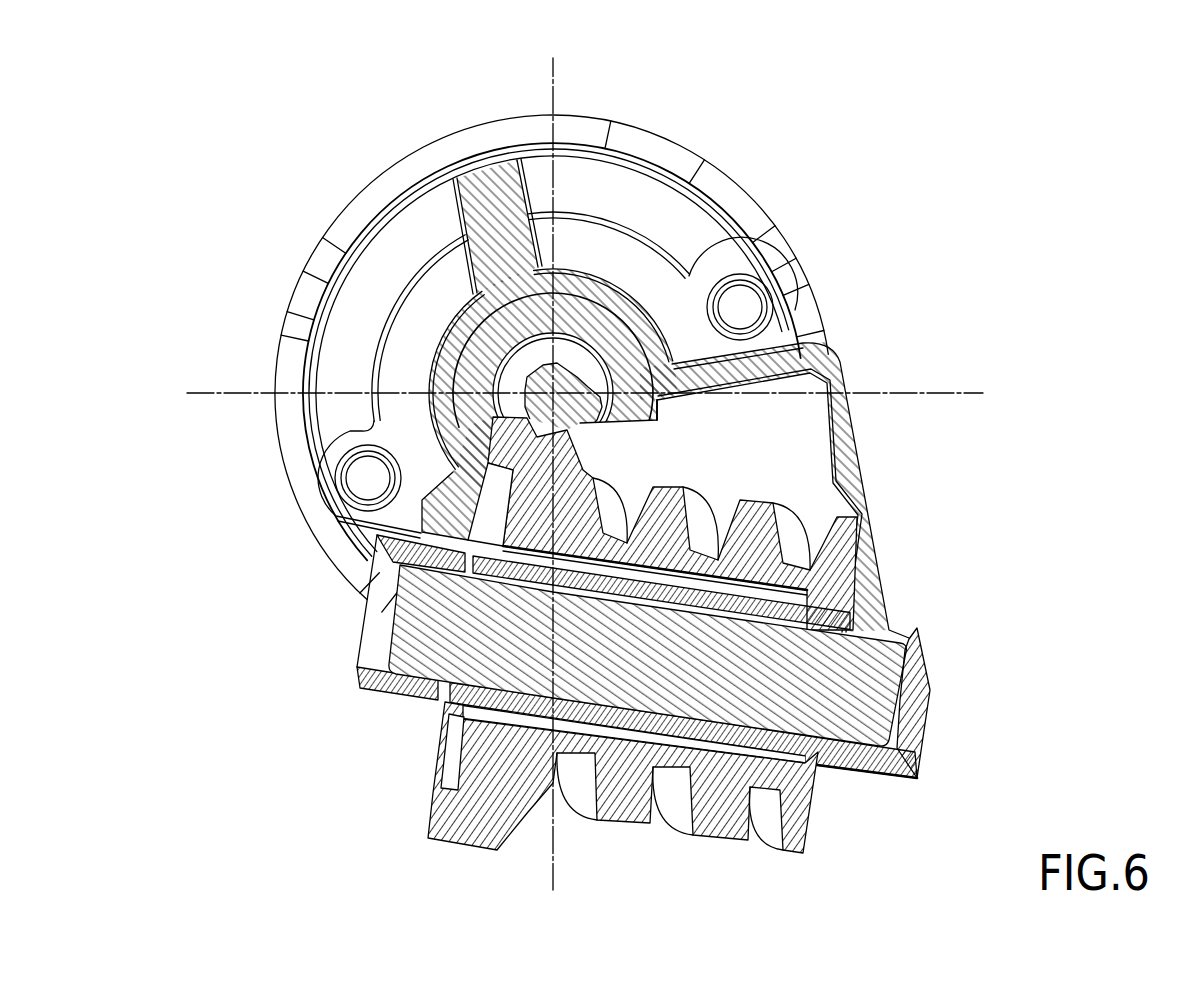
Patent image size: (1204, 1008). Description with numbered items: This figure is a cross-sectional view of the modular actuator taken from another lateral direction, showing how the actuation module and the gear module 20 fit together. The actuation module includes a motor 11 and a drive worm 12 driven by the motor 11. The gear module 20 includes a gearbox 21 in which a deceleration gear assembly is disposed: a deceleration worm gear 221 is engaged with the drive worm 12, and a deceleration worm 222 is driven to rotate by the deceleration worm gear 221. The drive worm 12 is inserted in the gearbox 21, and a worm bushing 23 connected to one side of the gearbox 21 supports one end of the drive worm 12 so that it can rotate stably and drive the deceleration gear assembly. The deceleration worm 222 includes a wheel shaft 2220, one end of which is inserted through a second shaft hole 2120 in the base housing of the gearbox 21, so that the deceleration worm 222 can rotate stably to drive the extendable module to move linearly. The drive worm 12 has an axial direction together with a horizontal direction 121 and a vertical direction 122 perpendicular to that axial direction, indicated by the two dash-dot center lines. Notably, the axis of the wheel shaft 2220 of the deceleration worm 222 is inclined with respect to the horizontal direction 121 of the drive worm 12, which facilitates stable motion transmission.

The motor 11 is at (433, 157).
The drive worm 12 is at (523, 368).
The horizontal direction 121 is at (238, 392).
The vertical direction 122 is at (556, 90).
The gear module 20 is at (667, 470).
The gearbox 21 is at (623, 398).
The worm bushing 23 is at (657, 418).
The deceleration worm gear 221 is at (443, 812).
The deceleration worm 222 is at (792, 822).
The second shaft hole 2120 is at (913, 673).
The wheel shaft 2220 is at (880, 717).